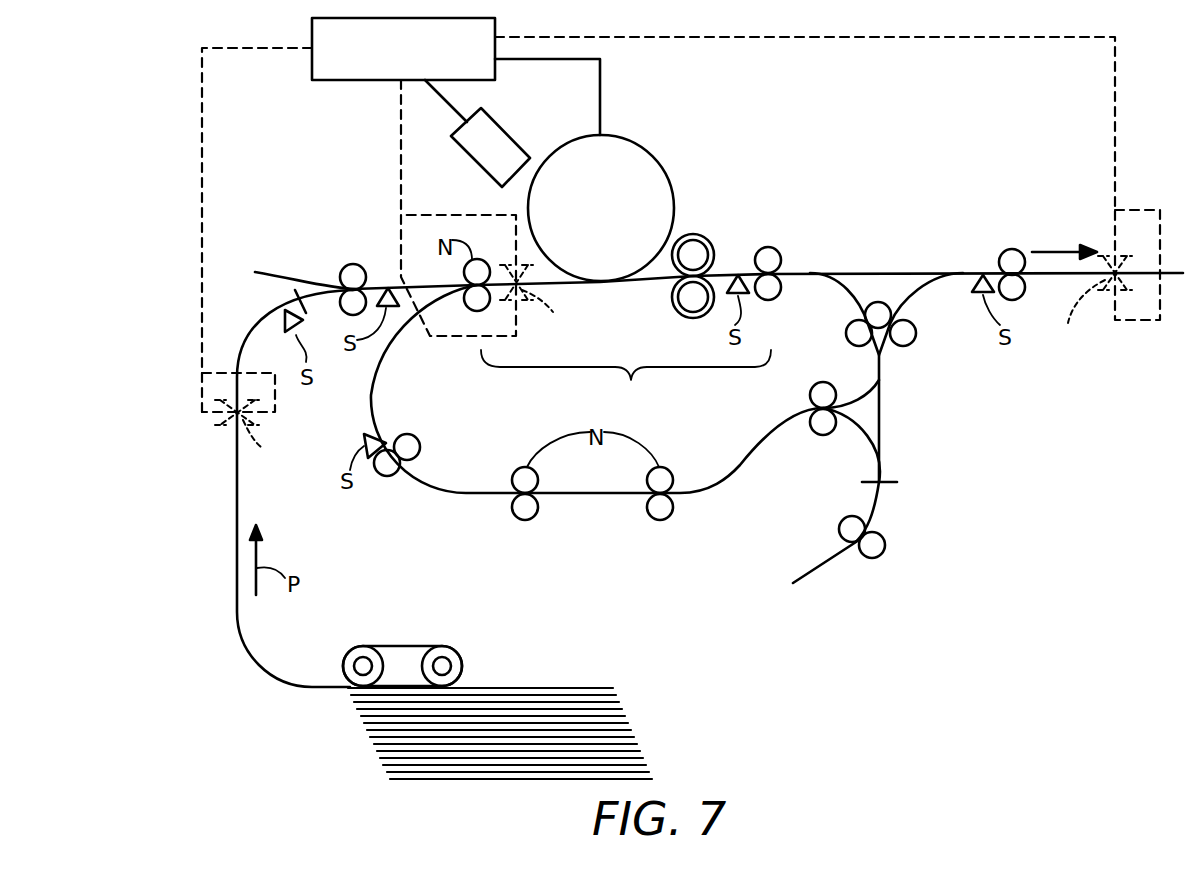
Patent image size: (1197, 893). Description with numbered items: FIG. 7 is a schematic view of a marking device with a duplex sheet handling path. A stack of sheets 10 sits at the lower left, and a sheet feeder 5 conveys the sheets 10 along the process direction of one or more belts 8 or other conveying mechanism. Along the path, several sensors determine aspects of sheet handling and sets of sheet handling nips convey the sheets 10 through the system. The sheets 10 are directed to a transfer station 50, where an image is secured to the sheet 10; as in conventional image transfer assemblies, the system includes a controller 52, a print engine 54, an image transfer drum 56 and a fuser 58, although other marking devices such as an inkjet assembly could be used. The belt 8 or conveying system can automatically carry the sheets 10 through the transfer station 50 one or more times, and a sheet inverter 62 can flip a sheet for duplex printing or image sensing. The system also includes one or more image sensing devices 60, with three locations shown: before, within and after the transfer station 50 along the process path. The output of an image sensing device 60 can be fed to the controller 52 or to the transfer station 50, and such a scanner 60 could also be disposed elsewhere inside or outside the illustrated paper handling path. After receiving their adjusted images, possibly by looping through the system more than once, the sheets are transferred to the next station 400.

The sheet feeder 5 is at (402, 645).
The belt 8 is at (238, 465).
The sheet 10 is at (533, 687).
The transfer station 50 is at (626, 381).
The controller 52 is at (456, 76).
The print engine 54 is at (477, 133).
The image transfer drum 56 is at (601, 208).
The fuser 58 is at (700, 238).
The image sensing device 60 is at (673, 360).
The sheet inverter 62 is at (832, 567).
The next station 400 is at (1060, 250).